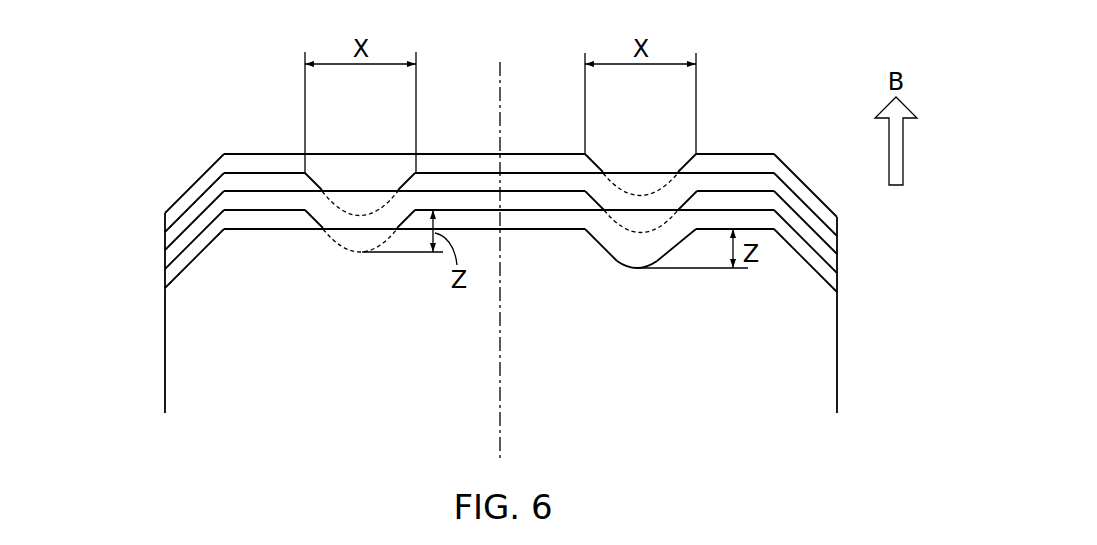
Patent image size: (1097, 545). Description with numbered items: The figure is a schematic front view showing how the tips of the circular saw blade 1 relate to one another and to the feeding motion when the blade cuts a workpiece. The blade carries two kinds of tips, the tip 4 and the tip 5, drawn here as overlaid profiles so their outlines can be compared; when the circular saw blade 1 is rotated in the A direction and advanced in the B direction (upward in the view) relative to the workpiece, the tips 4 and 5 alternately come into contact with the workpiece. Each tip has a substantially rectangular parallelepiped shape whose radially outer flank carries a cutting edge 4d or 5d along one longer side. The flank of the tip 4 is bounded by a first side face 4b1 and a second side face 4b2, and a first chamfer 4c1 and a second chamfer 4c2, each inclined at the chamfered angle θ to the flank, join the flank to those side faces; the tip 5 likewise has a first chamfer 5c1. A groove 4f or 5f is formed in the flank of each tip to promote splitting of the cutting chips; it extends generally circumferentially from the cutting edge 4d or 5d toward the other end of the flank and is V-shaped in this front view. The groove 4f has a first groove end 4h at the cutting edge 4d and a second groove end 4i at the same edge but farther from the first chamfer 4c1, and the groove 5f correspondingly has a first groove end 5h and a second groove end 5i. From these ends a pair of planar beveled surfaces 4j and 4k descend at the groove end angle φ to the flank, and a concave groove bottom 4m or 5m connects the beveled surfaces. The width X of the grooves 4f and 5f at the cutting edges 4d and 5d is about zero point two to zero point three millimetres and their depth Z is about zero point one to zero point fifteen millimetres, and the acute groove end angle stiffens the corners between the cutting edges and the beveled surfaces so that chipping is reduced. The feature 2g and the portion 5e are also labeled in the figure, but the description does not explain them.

The circular saw blade 1 is at (503, 295).
The center line 2g is at (502, 92).
The tip 4 is at (238, 150).
The tip 5 is at (250, 170).
The first side face 4b1 is at (837, 358).
The second side face 4b2 is at (165, 360).
The first chamfer 4c1 is at (807, 261).
The second chamfer 4c2 is at (193, 263).
The first chamfer 5c1 is at (807, 233).
The cutting edge 4d is at (753, 217).
The cutting edge 5d is at (732, 209).
The groove 4f is at (637, 258).
The first groove end 4h is at (697, 235).
The second groove end 4i is at (585, 233).
The beveled surface 4j is at (665, 259).
The beveled surface 4k is at (620, 259).
The groove bottom 4m is at (638, 272).
The flat portion of second layer 5e is at (713, 218).
The groove 5f is at (334, 218).
The first groove end 5h is at (410, 207).
The second groove end 5i is at (308, 210).
The groove bottom 5m is at (360, 252).